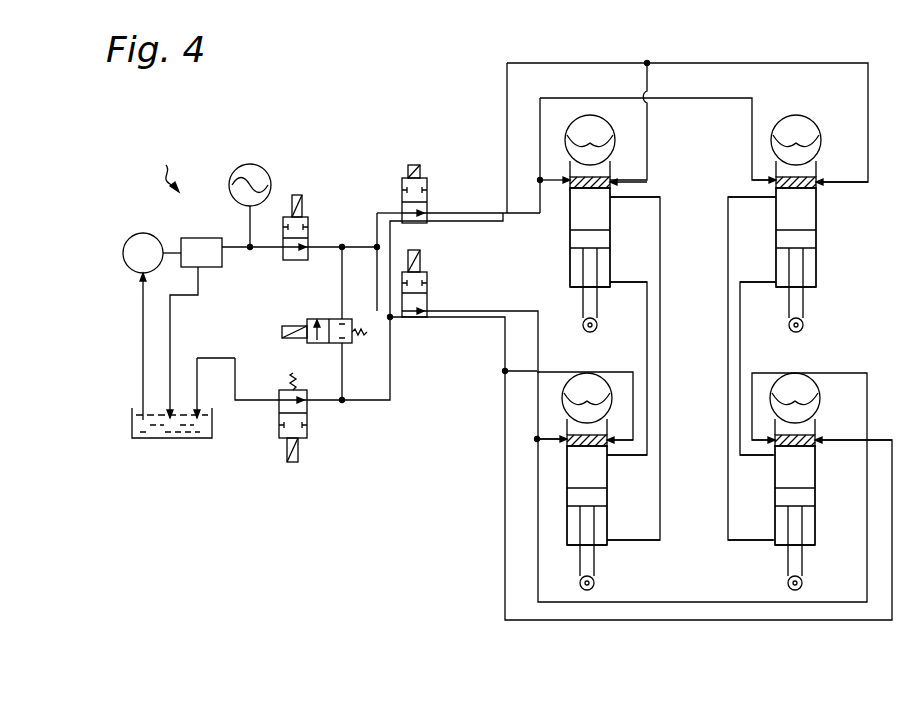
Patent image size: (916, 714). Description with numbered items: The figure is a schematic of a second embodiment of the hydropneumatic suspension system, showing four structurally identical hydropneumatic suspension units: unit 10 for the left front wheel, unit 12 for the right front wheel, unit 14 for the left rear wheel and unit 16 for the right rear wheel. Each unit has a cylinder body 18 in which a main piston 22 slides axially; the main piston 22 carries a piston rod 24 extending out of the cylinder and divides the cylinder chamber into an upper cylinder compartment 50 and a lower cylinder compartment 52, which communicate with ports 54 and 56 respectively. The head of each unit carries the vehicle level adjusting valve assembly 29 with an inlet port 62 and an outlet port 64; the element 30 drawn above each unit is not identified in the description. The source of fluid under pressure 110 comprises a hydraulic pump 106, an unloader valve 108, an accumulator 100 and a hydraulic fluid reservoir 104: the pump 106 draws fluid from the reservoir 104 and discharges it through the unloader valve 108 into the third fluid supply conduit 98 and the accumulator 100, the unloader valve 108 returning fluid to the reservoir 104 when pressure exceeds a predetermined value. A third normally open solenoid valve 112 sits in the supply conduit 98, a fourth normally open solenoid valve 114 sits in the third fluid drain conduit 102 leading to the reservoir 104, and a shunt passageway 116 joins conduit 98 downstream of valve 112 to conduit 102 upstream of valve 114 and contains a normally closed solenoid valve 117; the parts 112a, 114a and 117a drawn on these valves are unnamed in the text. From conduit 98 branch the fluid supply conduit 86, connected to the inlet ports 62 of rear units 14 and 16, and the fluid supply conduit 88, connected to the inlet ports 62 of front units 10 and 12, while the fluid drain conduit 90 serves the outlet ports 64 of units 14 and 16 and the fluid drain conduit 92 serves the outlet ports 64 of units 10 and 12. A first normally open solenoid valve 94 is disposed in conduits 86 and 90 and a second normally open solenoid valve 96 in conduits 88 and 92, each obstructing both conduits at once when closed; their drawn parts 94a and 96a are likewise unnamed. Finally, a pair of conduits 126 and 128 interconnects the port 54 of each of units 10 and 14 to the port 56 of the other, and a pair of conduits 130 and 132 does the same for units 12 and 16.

The hydropneumatic suspension unit 10 is at (612, 237).
The hydropneumatic suspension unit 12 is at (819, 237).
The hydropneumatic suspension unit 14 is at (608, 495).
The hydropneumatic suspension unit 16 is at (816, 495).
The cylinder body 18 is at (713, 361).
The main piston 22 is at (697, 385).
The piston rod 24 is at (695, 421).
The vehicle level adjusting valve assembly 29 is at (683, 276).
The accumulator 30 is at (708, 259).
The upper cylinder compartment 50 is at (691, 344).
The lower cylinder compartment 52 is at (697, 419).
The port 54 is at (691, 345).
The port 56 is at (691, 416).
The inlet port 62 is at (656, 315).
The outlet port 64 is at (749, 297).
The fluid supply conduit 86 is at (376, 278).
The fluid supply conduit 88 is at (374, 212).
The fluid drain conduit 90 is at (439, 318).
The fluid drain conduit 92 is at (448, 226).
The first normally open solenoid valve 94 is at (427, 297).
The solenoid 94a is at (423, 275).
The second normally open solenoid valve 96 is at (427, 191).
The solenoid 96a is at (423, 166).
The third fluid supply conduit 98 is at (340, 245).
The accumulator 100 is at (254, 163).
The third fluid drain conduit 102 is at (390, 400).
The hydraulic fluid reservoir 104 is at (208, 440).
The hydraulic pump 106 is at (148, 233).
The unloader valve 108 is at (198, 236).
The source of fluid under pressure 110 is at (168, 169).
The third normally open solenoid valve 112 is at (282, 264).
The solenoid 112a is at (307, 189).
The fourth normally open solenoid valve 114 is at (307, 418).
The solenoid 114a is at (300, 450).
The shunt passageway 116 is at (338, 275).
The normally closed solenoid valve 117 is at (322, 319).
The solenoid 117a is at (292, 328).
The conduit 126 is at (648, 269).
The conduit 128 is at (660, 333).
The conduit 130 is at (728, 272).
The conduit 132 is at (740, 367).